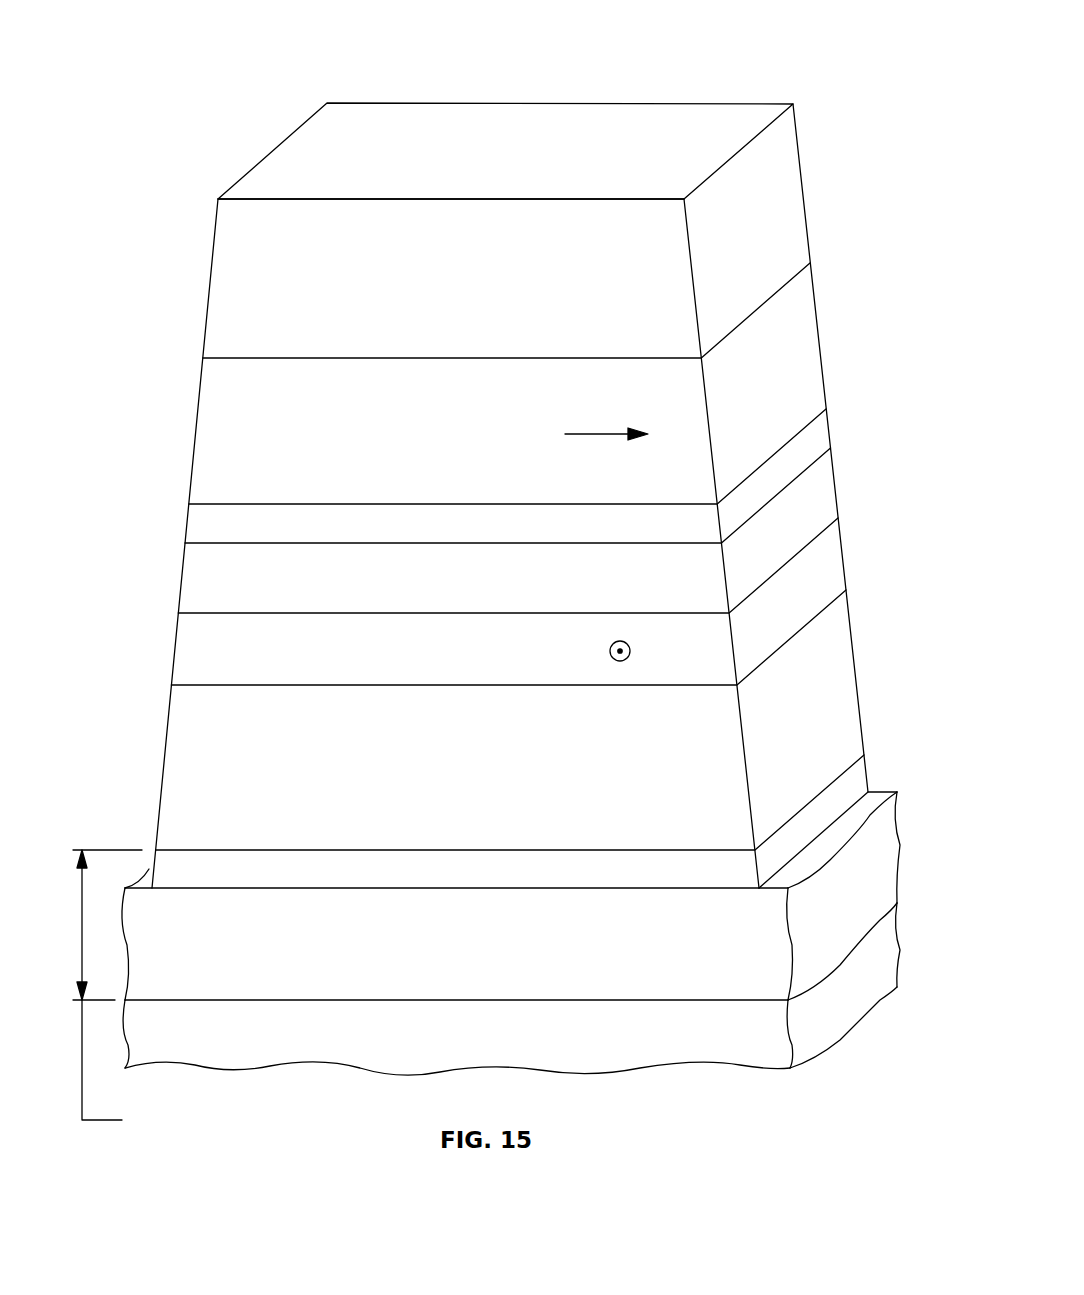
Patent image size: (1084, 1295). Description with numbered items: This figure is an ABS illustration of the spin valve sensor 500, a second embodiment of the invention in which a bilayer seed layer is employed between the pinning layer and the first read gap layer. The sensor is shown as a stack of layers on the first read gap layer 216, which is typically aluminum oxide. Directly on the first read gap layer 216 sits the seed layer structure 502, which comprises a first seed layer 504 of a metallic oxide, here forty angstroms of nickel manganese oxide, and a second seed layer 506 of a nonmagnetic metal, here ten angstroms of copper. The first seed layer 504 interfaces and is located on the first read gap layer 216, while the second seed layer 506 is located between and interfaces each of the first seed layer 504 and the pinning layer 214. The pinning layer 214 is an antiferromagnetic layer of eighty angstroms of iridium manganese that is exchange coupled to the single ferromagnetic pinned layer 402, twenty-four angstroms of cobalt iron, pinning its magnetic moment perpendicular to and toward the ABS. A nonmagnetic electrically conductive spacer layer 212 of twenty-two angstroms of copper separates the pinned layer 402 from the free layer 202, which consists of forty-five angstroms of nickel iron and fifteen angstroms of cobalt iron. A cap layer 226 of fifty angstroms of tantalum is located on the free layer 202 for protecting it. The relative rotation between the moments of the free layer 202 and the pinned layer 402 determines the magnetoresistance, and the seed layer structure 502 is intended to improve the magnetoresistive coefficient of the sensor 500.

The spin valve sensor 500 is at (705, 62).
The cap layer 226 is at (793, 173).
The free layer 202 is at (822, 432).
The spacer layer 212 is at (827, 481).
The pinned layer 402 is at (836, 561).
The pinning layer 214 is at (843, 654).
The second seed layer 506 is at (860, 772).
The first seed layer 504 is at (880, 877).
The first read gap layer 216 is at (877, 988).
The seed layer structure 502 is at (195, 1021).